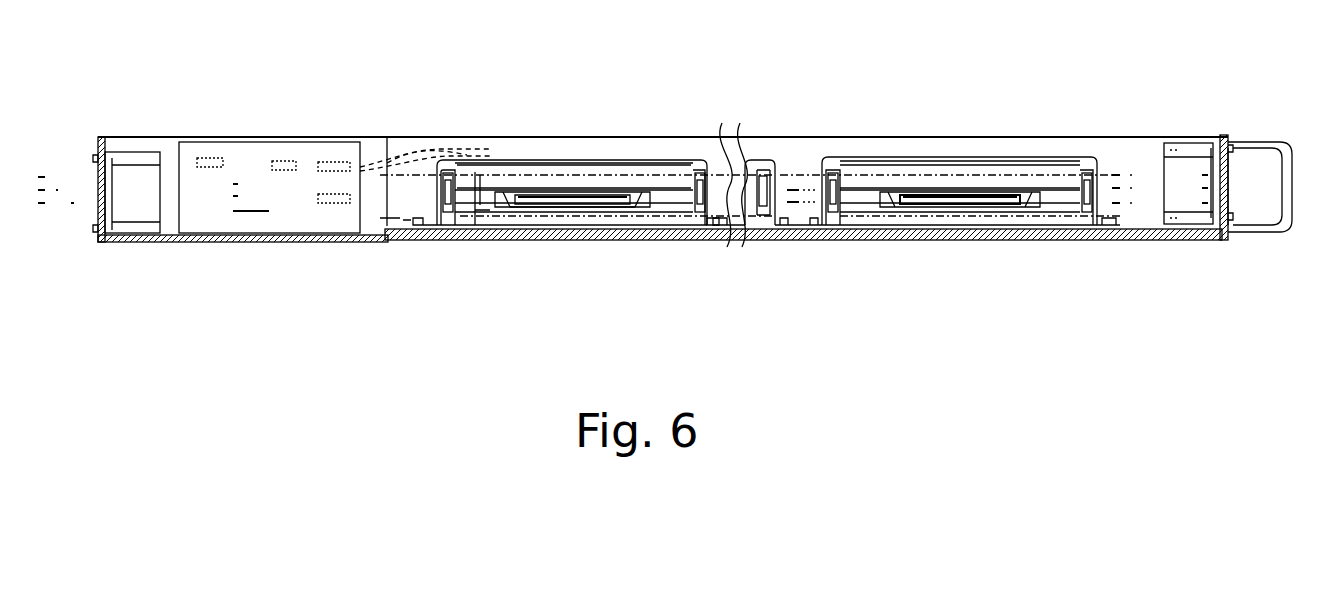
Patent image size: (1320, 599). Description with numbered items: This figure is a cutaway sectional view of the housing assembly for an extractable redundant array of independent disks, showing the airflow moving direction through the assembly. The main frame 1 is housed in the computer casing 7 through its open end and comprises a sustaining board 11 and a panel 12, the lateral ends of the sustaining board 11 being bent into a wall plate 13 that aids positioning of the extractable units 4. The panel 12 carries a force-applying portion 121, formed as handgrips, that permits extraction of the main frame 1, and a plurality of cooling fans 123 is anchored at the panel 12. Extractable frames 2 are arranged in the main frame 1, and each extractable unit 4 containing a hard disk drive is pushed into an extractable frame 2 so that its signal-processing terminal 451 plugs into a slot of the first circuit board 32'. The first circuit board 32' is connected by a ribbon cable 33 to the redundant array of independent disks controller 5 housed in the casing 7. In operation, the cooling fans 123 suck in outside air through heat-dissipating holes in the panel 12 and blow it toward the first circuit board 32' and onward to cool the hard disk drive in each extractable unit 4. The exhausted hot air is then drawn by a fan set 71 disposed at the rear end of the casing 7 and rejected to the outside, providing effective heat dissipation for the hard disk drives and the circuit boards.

The main frame 1 is at (1050, 132).
The sustaining board 11 is at (878, 241).
The panel 12 is at (1222, 241).
The force-applying portion 121 is at (1260, 145).
The cooling fans 123 is at (1185, 162).
The wall plate 13 is at (953, 136).
The extractable frames 2 is at (562, 150).
The first circuit board 32' is at (767, 154).
The ribbon cable 33 is at (420, 150).
The extractable units 4 is at (513, 160).
The signal-processing terminal 451 is at (647, 187).
The redundant array of independent disks controller 5 is at (287, 150).
The computer casing 7 is at (313, 243).
The fan set 71 is at (135, 162).